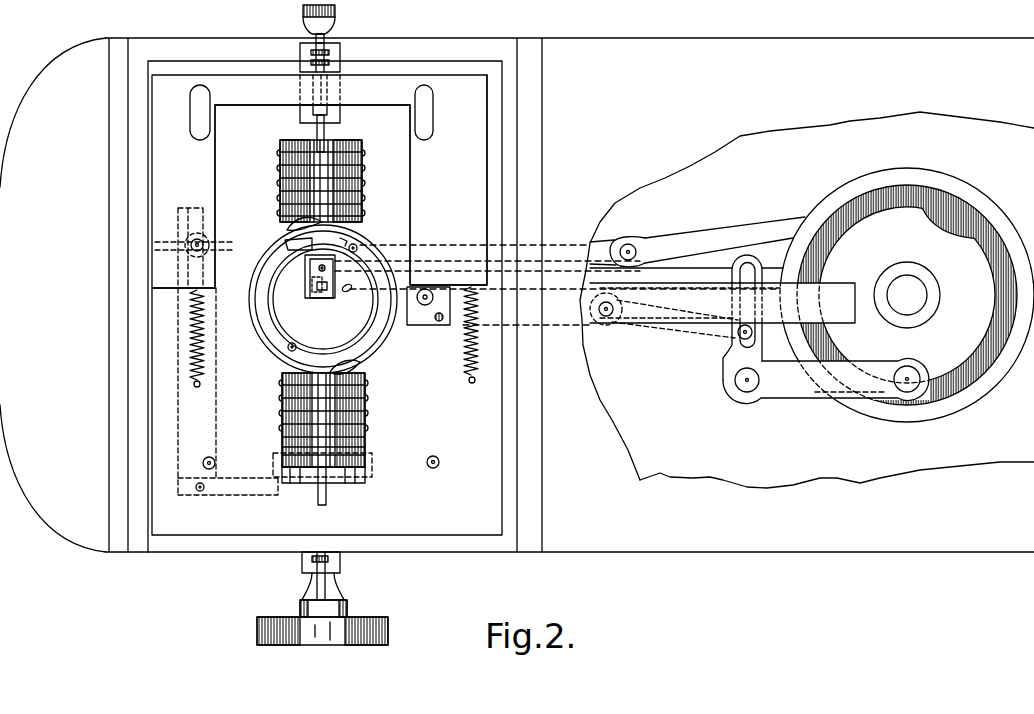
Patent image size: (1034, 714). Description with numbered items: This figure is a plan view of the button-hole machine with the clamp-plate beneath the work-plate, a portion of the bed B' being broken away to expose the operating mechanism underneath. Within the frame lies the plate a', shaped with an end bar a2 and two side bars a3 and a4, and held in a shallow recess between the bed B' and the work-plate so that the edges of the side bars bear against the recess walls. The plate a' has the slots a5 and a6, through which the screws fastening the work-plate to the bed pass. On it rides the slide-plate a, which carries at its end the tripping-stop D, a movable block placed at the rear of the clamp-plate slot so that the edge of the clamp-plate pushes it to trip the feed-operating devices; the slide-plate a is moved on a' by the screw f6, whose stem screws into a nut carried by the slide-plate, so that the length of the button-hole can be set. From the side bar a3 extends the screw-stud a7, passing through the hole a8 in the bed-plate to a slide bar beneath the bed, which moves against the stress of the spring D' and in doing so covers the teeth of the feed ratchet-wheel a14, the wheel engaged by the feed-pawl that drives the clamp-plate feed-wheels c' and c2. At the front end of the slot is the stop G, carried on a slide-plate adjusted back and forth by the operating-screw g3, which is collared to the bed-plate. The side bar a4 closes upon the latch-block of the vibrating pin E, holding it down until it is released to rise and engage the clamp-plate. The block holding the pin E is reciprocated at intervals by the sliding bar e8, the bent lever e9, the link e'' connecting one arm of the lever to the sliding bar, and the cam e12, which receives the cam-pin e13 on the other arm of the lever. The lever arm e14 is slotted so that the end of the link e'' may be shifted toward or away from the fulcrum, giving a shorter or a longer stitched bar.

The oscillating pin E is at (432, 284).
The screw f6 is at (330, 37).
The end bar a2 is at (301, 90).
The slide-plate a' is at (312, 92).
The slide-plate a is at (331, 117).
The tripping-stop D is at (301, 133).
The slot a6 is at (212, 125).
The slot a5 is at (435, 125).
The side bar a4 is at (448, 180).
The side bar a3 is at (184, 300).
The stud a7 is at (205, 242).
The hole a8 is at (205, 250).
The spring D' is at (327, 337).
The clamp-plate feed-wheel c2 is at (321, 181).
The clamp-plate feed-wheel c' is at (323, 428).
The feed ratchet-wheel a14 is at (375, 455).
The stop G is at (326, 495).
The bed B' is at (308, 453).
The sliding bar e8 is at (457, 328).
The operating-screw g3 is at (310, 564).
The link e'' is at (697, 291).
The lever arm e14 is at (752, 332).
The bent lever e9 is at (790, 390).
The cam-pin e13 is at (902, 392).
The cam e12 is at (907, 295).